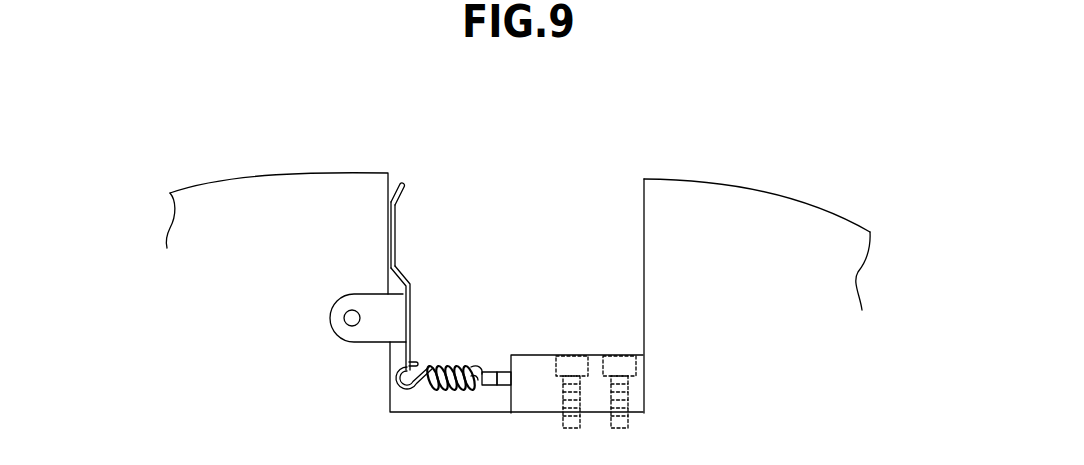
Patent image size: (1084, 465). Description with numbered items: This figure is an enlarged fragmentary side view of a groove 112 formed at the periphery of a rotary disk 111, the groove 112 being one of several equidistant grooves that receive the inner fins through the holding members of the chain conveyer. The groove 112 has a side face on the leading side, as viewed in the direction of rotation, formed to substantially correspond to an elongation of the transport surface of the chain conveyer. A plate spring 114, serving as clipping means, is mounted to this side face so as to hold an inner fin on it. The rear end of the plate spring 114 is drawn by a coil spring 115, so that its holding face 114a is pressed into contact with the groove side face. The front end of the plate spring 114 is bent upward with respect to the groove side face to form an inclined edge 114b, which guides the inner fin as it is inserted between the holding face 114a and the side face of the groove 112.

The rotary disk 111 is at (767, 232).
The groove 112 is at (644, 203).
The plate spring 114 is at (462, 234).
The holding face 114a is at (393, 230).
The inclined edge 114b is at (406, 192).
The coil spring 115 is at (455, 362).